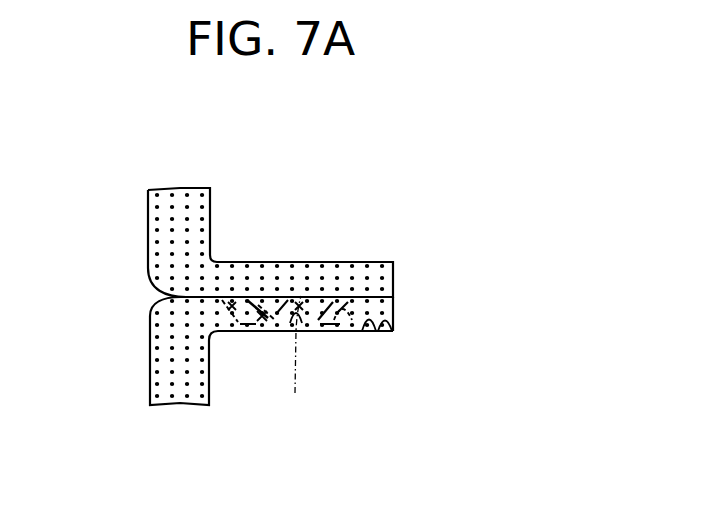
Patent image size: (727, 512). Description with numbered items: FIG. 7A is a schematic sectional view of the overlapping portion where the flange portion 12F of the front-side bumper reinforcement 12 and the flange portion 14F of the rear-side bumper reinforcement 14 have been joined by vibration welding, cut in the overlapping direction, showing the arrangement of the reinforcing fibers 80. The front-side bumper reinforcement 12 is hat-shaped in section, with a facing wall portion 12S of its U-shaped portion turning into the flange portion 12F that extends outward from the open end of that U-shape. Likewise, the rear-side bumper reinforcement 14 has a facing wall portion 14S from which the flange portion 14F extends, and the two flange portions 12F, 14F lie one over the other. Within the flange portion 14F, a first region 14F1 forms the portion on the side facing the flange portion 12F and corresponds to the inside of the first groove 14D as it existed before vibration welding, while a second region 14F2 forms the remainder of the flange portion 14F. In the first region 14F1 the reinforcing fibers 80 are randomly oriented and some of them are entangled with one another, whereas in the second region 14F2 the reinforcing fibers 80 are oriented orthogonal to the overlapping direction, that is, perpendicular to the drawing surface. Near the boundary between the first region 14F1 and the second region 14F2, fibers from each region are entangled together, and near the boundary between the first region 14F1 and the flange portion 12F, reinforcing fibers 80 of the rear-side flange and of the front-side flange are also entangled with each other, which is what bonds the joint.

The front-side bumper reinforcement 12 is at (261, 220).
The facing wall portion 12S is at (148, 232).
The flange portion 12F is at (364, 260).
The rear-side bumper reinforcement 14 is at (255, 313).
The facing wall portion 14S is at (150, 366).
The flange portion 14F is at (297, 303).
The first region 14F1 is at (284, 262).
The second region 14F2 is at (357, 343).
The first groove 14D is at (293, 360).
The reinforcing fibers 80 is at (238, 262).